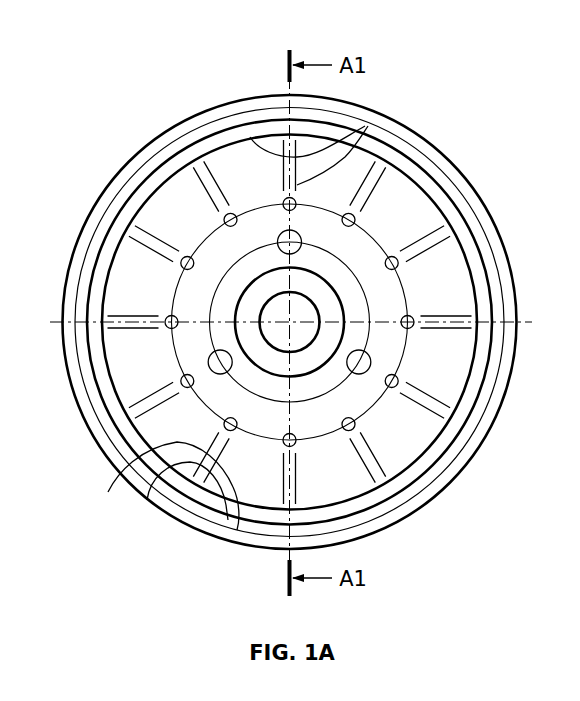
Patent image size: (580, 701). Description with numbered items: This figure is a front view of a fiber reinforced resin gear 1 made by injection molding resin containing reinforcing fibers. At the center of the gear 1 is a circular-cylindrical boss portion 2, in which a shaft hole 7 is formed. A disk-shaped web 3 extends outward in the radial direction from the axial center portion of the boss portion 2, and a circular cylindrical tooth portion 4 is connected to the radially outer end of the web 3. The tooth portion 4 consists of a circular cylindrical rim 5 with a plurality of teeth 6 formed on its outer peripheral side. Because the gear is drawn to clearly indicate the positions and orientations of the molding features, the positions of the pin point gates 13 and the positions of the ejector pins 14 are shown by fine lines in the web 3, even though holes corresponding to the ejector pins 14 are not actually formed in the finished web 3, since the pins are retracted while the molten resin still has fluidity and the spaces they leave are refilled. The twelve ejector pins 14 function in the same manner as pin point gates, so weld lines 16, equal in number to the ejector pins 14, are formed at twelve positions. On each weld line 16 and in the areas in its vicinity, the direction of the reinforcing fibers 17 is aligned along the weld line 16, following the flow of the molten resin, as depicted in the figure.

The fiber reinforced resin gear 1 is at (463, 150).
The boss portion 2 is at (240, 310).
The web 3 is at (440, 281).
The tooth portion 4 is at (515, 363).
The rim 5 is at (470, 407).
The teeth 6 is at (470, 467).
The shaft hole 7 is at (297, 348).
The pin point gates 13 is at (300, 247).
The ejector pins 14 is at (283, 202).
The weld line 16 is at (365, 126).
The reinforcing fibers 17 is at (250, 137).